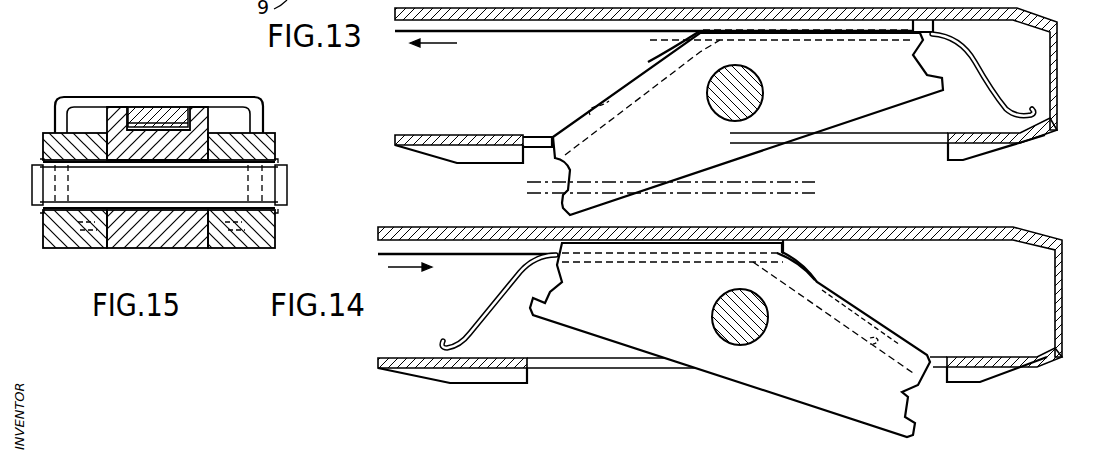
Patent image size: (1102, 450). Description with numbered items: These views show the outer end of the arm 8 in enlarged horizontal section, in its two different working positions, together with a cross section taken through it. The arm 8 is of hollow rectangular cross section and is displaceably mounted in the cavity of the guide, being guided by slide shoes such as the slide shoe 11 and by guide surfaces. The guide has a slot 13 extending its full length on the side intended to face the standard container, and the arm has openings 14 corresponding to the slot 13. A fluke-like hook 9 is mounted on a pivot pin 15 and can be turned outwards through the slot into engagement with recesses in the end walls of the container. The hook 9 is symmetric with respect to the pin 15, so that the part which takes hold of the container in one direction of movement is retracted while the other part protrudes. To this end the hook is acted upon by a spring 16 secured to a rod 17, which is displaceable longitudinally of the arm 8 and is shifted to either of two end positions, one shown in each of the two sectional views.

In FIG. 15, the arm 8 is at (210, 100).
In FIG. 15, the fluke-like hook 9 is at (168, 248).
In FIG. 13, the fluke-like hook 9 is at (583, 172).
In FIG. 15, the slide shoe 11 is at (86, 248).
In FIG. 13, the slot 13 is at (160, 0).
In FIG. 13, the opening 14 is at (868, 142).
In FIG. 14, the opening 14 is at (607, 363).
In FIG. 15, the pivot pin 15 is at (287, 181).
In FIG. 14, the pivot pin 15 is at (760, 325).
In FIG. 15, the spring 16 is at (138, 107).
In FIG. 13, the spring 16 is at (992, 97).
In FIG. 14, the spring 16 is at (493, 300).
In FIG. 15, the rod 17 is at (175, 107).
In FIG. 13, the rod 17 is at (540, 33).
In FIG. 14, the rod 17 is at (580, 257).